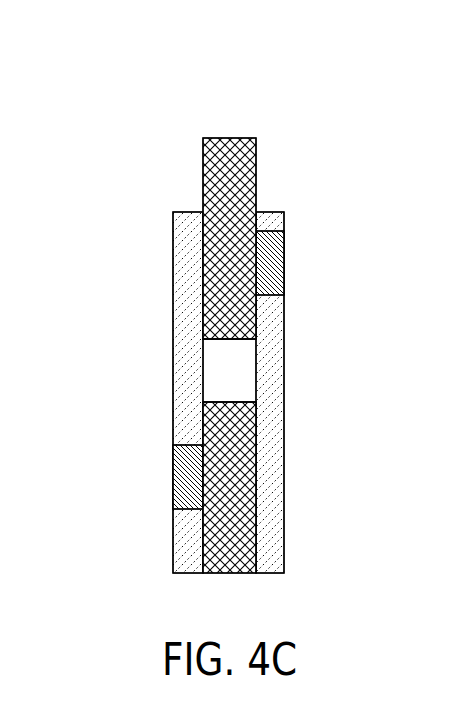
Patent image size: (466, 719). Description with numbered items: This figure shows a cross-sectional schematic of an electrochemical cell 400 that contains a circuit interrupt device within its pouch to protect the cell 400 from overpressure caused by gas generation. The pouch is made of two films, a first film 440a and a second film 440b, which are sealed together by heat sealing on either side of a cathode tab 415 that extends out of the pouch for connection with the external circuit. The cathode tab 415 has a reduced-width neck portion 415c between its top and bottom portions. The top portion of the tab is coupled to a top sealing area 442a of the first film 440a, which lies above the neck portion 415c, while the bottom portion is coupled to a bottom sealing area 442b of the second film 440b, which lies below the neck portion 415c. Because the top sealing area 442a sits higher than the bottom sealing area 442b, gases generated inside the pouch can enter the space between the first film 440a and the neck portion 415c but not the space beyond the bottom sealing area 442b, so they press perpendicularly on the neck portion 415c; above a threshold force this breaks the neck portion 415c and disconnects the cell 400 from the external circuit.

The electrochemical cell 400 is at (133, 100).
The cathode tab 415 is at (203, 173).
The neck portion 415c is at (212, 369).
The first film 440a is at (285, 385).
The second film 440b is at (173, 290).
The top sealing area 442a is at (285, 258).
The bottom sealing area 442b is at (173, 480).